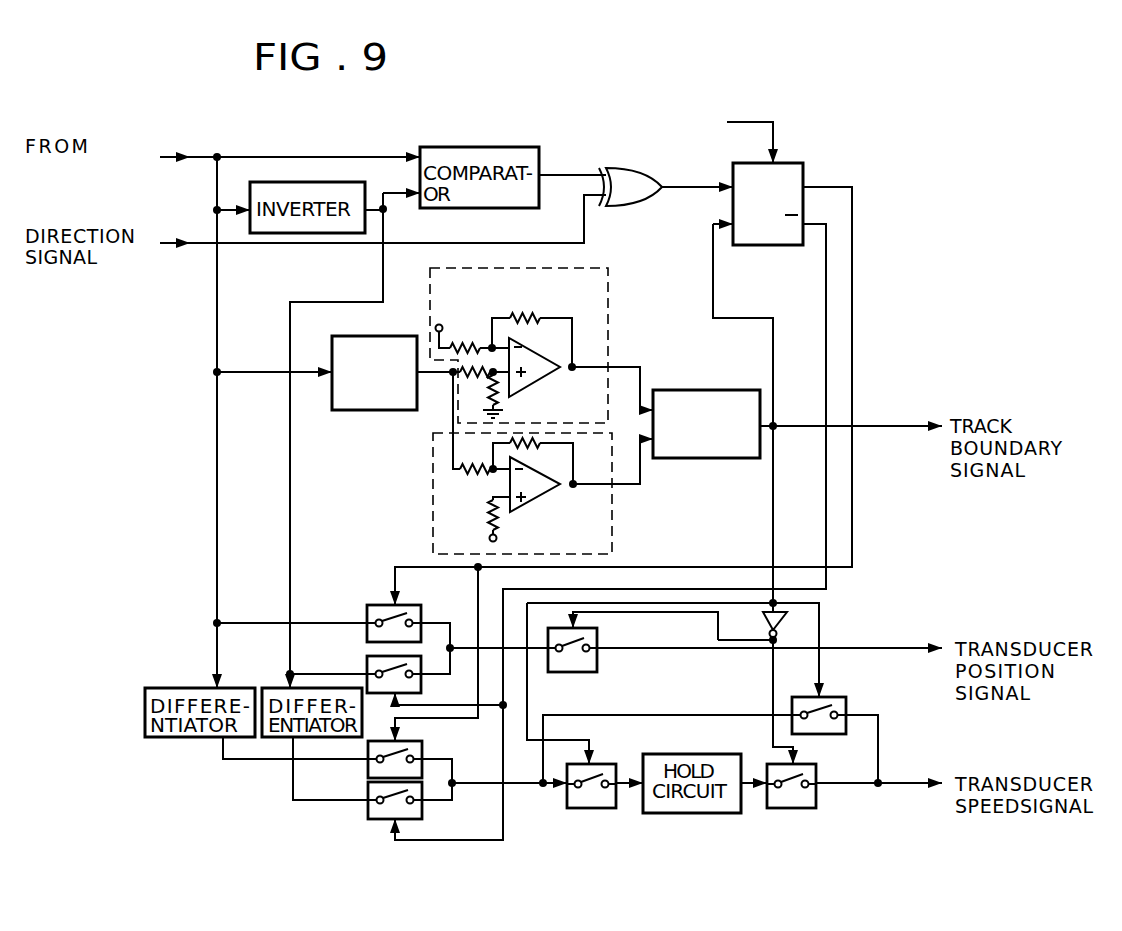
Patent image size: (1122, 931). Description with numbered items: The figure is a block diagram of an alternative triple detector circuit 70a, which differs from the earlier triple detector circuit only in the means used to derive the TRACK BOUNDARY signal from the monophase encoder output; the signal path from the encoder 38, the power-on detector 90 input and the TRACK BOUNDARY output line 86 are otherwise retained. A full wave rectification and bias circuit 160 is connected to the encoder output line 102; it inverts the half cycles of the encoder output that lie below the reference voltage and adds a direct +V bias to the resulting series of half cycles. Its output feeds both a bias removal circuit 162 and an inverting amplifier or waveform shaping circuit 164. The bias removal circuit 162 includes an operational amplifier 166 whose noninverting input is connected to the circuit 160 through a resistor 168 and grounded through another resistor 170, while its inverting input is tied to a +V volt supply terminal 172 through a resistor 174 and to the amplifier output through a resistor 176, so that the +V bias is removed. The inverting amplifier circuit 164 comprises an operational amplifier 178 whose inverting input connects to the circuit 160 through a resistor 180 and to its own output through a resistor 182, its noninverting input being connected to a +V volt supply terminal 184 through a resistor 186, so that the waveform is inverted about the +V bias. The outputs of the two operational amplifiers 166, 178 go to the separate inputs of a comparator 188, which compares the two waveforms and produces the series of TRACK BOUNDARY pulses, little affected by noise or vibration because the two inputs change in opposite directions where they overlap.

The encoder 38 is at (107, 166).
The power on detector 90 is at (825, 93).
The encoder output line 102 is at (197, 161).
The full wave rectification and bias circuit 160 is at (372, 335).
The resistor 168 is at (456, 378).
The +V volt supply terminal 172 is at (441, 324).
The resistor 174 is at (465, 342).
The resistor 176 is at (540, 314).
The operational amplifier 166 is at (548, 361).
The resistor 170 is at (500, 406).
The bias removal circuit 162 is at (611, 332).
The resistor 180 is at (468, 472).
The resistor 182 is at (535, 445).
The operational amplifier 178 is at (543, 493).
The resistor 186 is at (490, 520).
The +V volt supply terminal 184 is at (497, 538).
The inverting amplifier or waveform shaping circuit 164 is at (613, 517).
The comparator 188 is at (705, 389).
The track boundary signal line 86 is at (880, 424).
The alternative triple detector circuit 70a is at (962, 222).